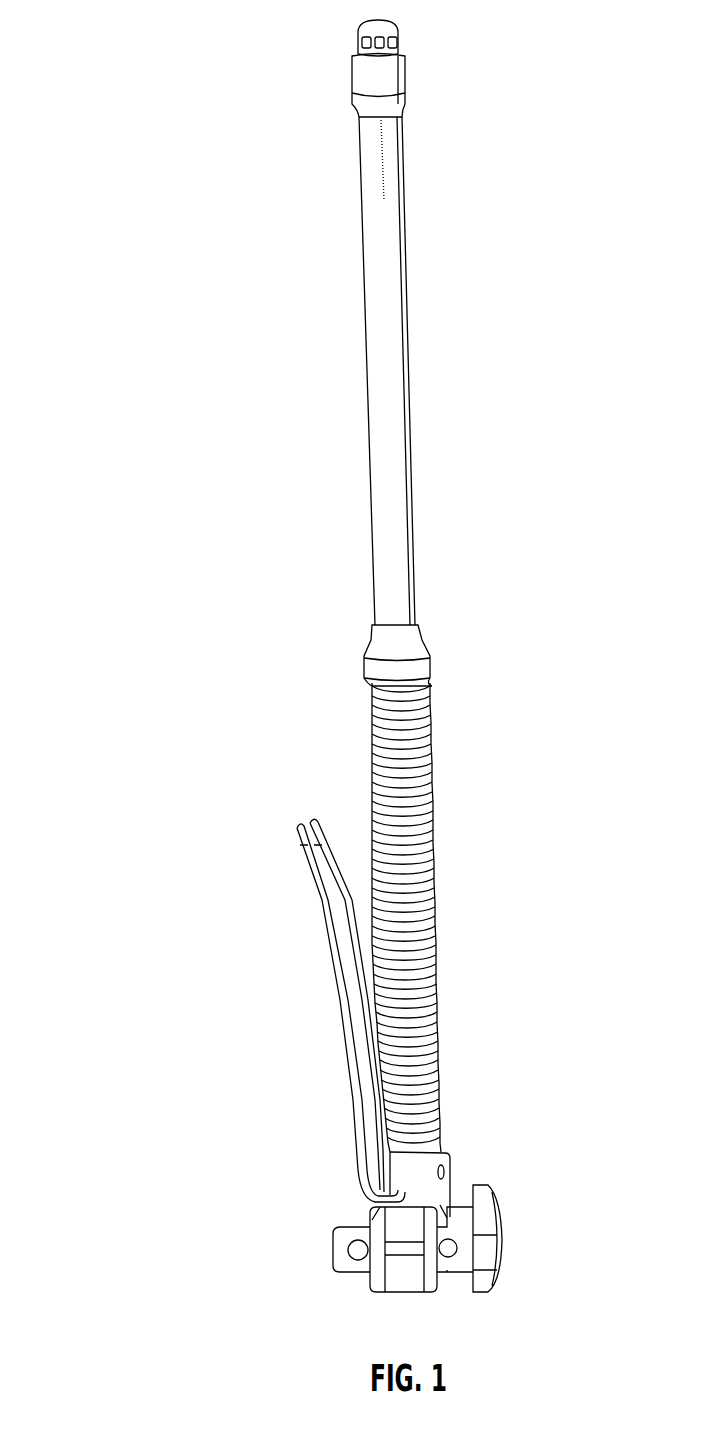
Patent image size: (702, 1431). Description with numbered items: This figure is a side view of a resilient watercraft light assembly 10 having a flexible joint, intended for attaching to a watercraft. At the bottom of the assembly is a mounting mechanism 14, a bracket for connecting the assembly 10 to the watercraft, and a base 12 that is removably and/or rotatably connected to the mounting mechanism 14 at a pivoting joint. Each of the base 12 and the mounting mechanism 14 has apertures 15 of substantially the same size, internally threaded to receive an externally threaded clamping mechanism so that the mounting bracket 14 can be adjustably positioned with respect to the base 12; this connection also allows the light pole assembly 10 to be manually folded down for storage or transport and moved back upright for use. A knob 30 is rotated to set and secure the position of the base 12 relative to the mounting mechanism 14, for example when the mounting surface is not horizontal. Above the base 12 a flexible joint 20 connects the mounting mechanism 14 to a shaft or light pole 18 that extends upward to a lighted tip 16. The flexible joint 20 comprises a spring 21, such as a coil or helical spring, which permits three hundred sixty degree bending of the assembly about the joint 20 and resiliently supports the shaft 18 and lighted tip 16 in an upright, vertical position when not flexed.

The watercraft light assembly 10 is at (94, 46).
The base 12 is at (332, 1218).
The mounting mechanism 14 is at (334, 1288).
The apertures 15 is at (346, 1252).
The lighted tip 16 is at (433, 95).
The light pole 18 is at (395, 458).
The flexible joint 20 is at (441, 819).
The spring 21 is at (431, 884).
The knob 30 is at (519, 1246).